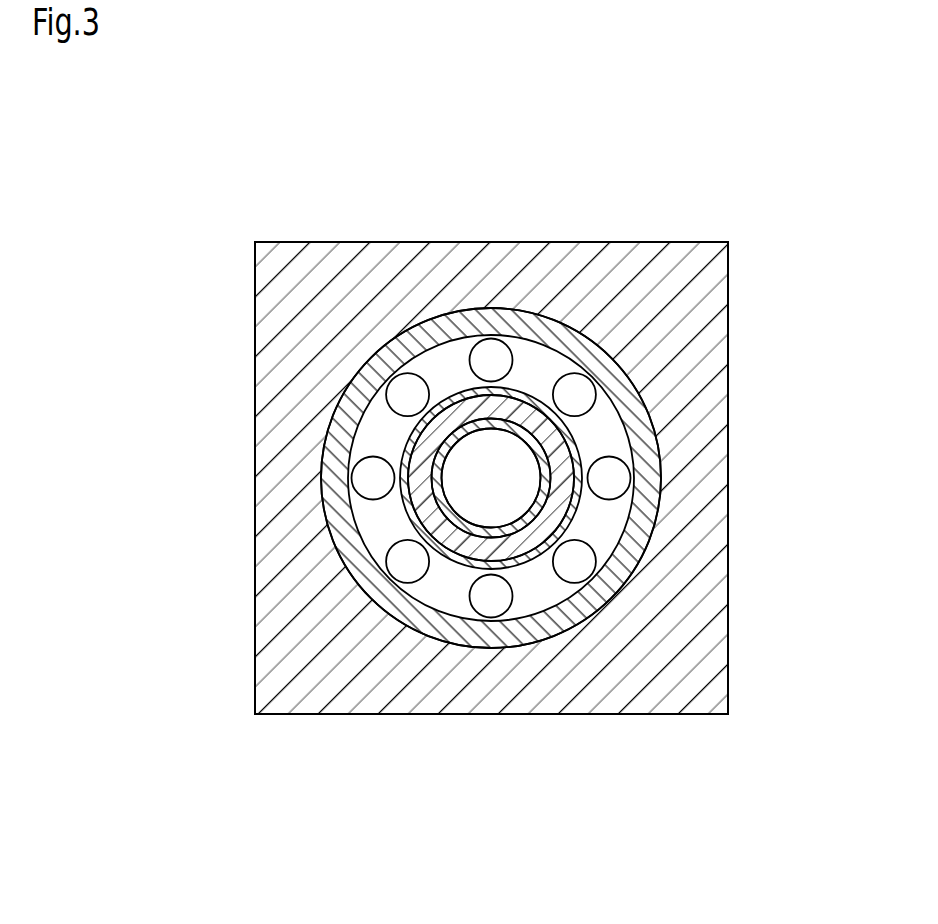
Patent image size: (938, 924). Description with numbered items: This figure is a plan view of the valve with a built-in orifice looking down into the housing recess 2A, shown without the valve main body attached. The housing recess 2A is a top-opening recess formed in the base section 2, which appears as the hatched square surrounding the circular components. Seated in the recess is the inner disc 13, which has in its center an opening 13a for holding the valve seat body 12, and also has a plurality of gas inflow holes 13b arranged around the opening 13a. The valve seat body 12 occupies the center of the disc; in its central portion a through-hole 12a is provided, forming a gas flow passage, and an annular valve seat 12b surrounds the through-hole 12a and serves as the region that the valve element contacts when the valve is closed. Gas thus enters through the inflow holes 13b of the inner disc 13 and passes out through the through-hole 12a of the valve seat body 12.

The base section 2 is at (712, 242).
The housing recess 2A is at (665, 436).
The valve seat body 12 is at (393, 502).
The through-hole 12a is at (485, 510).
The annular valve seat 12b is at (422, 544).
The inner disc 13 is at (340, 418).
The opening 13a is at (442, 382).
The gas inflow holes 13b is at (493, 345).